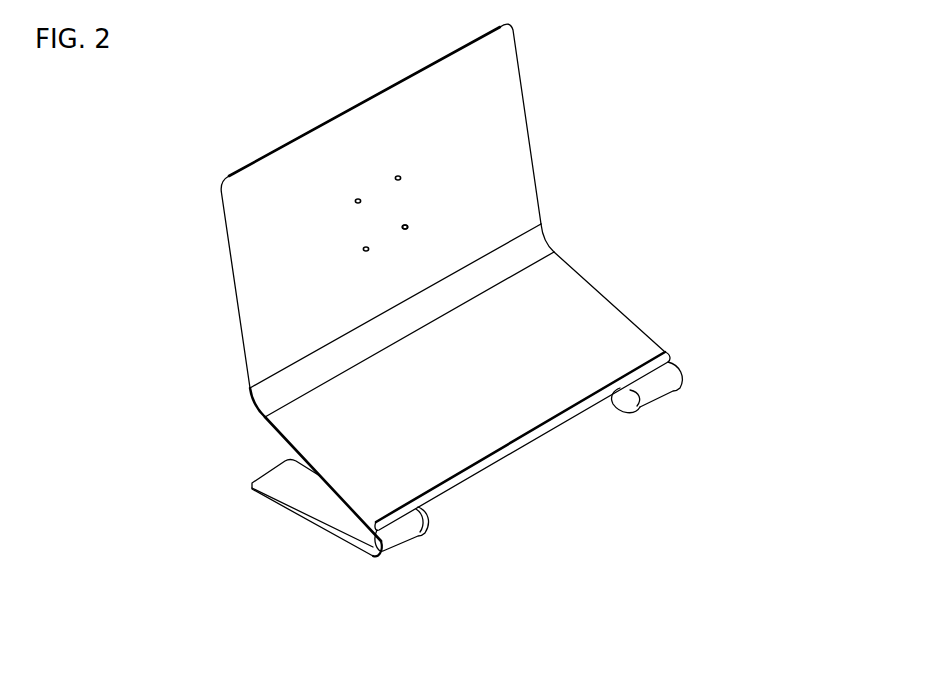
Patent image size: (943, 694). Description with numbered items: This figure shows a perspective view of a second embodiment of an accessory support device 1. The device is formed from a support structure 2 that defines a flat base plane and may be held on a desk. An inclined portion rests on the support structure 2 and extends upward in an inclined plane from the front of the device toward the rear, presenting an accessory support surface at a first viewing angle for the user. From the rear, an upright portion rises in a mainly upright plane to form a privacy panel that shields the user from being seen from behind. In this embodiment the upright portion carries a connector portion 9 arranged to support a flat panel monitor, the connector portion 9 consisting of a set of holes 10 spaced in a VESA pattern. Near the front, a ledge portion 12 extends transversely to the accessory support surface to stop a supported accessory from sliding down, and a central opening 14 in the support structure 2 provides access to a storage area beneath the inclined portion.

The accessory support device 1 is at (157, 465).
The support structure 2 is at (325, 502).
The connector portion 9 is at (385, 215).
The holes 10 is at (408, 226).
The ledge portion 12 is at (668, 358).
The central opening 14 is at (507, 470).